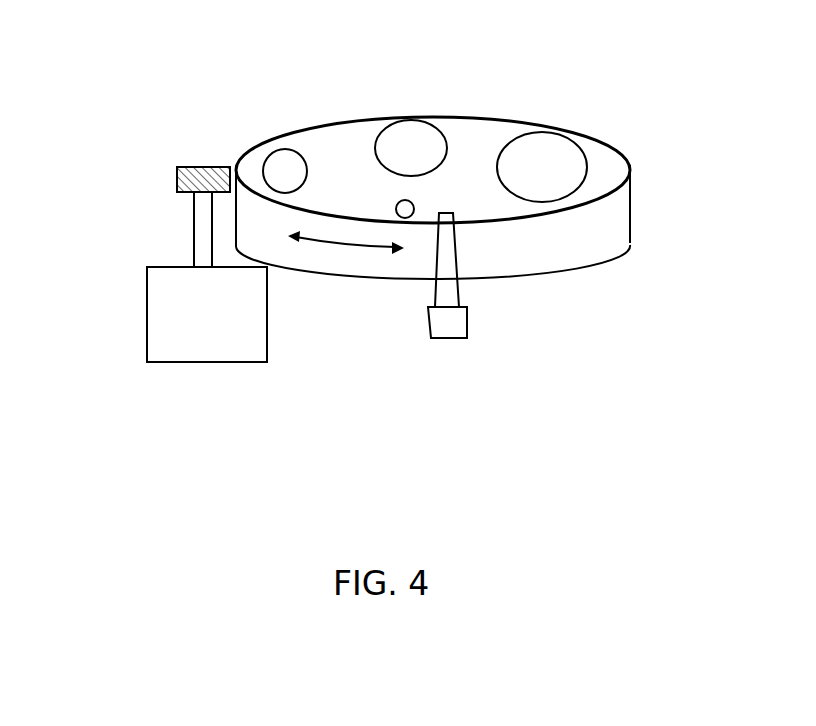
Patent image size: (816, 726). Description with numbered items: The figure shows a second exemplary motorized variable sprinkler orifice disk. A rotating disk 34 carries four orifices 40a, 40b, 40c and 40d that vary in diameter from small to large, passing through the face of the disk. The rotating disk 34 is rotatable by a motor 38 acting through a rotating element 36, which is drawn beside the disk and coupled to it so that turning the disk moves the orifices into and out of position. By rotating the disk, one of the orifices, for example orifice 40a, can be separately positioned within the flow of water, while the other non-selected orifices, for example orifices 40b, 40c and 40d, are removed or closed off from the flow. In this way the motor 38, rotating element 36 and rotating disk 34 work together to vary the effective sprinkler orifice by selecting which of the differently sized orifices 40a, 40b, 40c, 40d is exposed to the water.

The rotating disk 34 is at (565, 245).
The rotating element 36 is at (433, 337).
The motor 38 is at (158, 341).
The orifice 40a is at (400, 203).
The orifice 40b is at (285, 171).
The orifice 40c is at (418, 132).
The orifice 40d is at (557, 150).